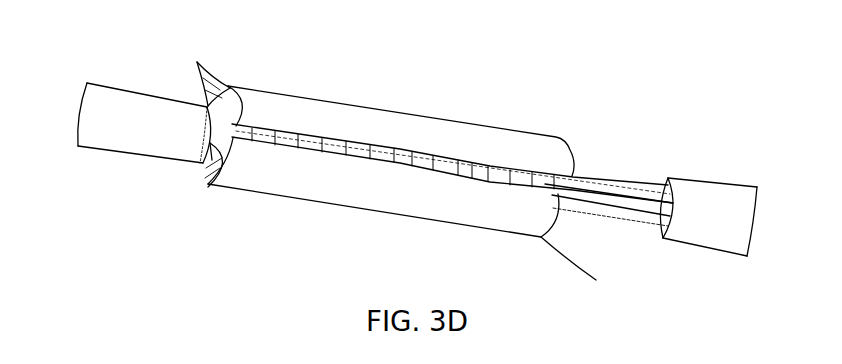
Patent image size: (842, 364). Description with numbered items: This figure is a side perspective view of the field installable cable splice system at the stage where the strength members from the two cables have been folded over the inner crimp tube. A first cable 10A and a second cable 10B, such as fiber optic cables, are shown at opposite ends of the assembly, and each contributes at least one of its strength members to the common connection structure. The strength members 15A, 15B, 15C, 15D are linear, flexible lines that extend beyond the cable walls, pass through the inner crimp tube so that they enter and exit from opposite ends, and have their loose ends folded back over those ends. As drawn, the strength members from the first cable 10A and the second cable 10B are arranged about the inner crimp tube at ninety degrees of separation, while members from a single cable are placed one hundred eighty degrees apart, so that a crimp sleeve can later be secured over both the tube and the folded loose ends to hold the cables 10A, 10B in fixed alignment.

The first cable 10A is at (157, 134).
The second cable 10B is at (723, 225).
The strength member 15A is at (408, 196).
The strength member 15B is at (203, 75).
The strength member 15C is at (408, 136).
The strength member 15D is at (578, 207).